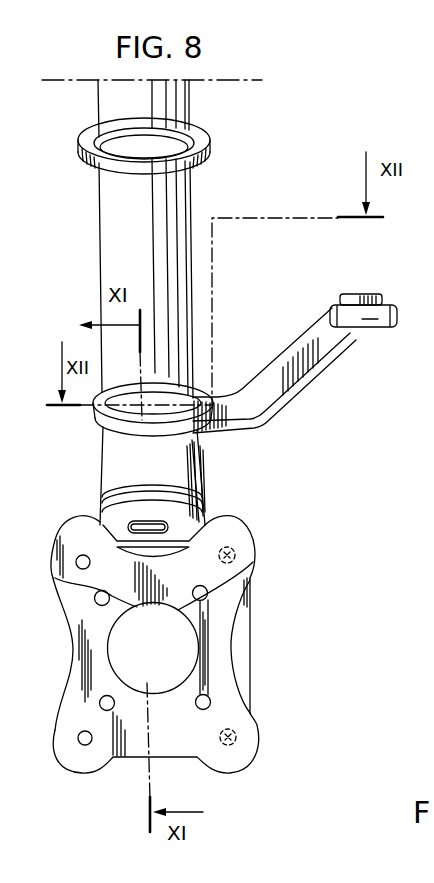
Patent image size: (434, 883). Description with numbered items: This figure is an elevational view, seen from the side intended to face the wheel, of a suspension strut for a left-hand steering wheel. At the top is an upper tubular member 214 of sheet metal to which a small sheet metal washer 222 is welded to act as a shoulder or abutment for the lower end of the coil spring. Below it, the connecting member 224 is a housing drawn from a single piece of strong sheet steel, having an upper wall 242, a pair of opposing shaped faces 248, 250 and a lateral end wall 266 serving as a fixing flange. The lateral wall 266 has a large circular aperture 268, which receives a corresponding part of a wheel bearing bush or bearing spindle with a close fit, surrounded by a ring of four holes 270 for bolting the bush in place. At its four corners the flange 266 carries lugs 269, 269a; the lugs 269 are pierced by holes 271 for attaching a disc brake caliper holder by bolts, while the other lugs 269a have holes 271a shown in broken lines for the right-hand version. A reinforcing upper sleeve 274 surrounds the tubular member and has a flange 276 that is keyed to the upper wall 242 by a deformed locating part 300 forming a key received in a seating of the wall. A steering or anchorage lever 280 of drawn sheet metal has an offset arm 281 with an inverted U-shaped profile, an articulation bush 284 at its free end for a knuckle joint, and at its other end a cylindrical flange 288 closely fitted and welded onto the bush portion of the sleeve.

The upper tubular member 214 is at (96, 266).
The sheet metal washer 222 is at (212, 152).
The connecting member 224 is at (202, 641).
The upper wall 242 is at (90, 522).
The shaped face 248 is at (250, 598).
The shaped face 250 is at (250, 680).
The lateral end wall 266 is at (220, 663).
The circular aperture 268 is at (189, 643).
The lug 269 is at (110, 606).
The lug 269a is at (214, 536).
The hole 270 is at (113, 700).
The hole 271 is at (86, 557).
The hole 271a is at (240, 548).
The upper sleeve 274 is at (108, 468).
The flange 276 is at (175, 517).
The steering lever 280 is at (295, 337).
The arm 281 is at (268, 378).
The articulation bush 284 is at (357, 300).
The cylindrical flange 288 is at (97, 417).
The locating part 300 is at (152, 519).